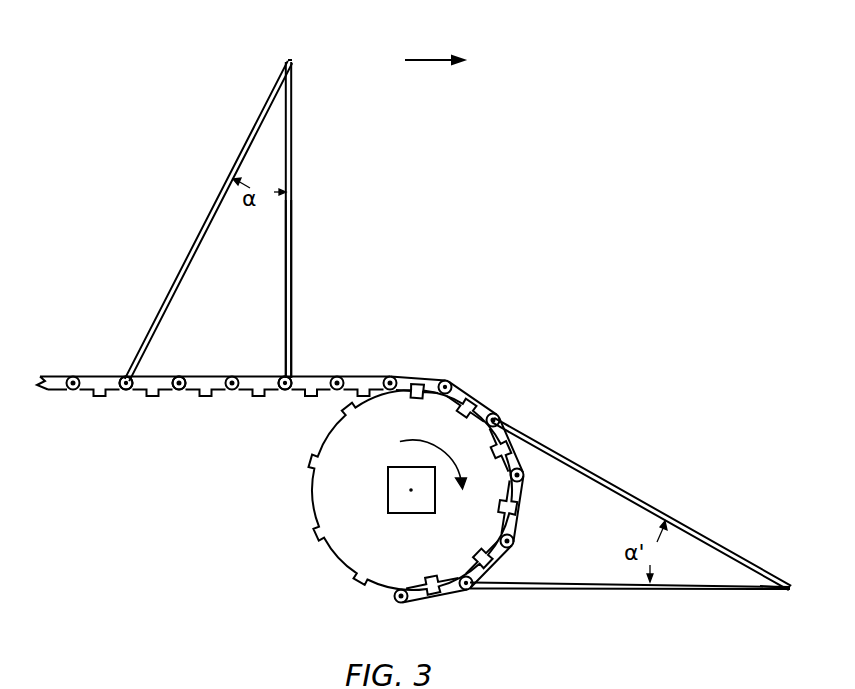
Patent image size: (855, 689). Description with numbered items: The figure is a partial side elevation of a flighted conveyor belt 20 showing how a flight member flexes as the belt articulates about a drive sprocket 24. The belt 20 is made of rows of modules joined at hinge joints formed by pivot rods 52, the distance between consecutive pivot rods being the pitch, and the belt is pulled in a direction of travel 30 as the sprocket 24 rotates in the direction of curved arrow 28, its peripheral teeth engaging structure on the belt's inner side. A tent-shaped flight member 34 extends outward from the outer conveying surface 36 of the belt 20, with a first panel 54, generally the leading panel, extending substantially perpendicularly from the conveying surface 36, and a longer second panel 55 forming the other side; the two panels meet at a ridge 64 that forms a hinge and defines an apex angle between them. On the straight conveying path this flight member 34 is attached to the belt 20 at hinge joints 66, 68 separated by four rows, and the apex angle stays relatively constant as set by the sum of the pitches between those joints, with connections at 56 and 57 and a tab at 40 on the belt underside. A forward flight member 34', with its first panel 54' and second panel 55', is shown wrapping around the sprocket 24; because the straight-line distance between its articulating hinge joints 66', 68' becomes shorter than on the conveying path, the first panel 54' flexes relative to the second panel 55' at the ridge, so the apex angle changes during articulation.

The direction of travel 30 is at (427, 60).
The ridge 64 is at (292, 60).
The flight member 34 is at (315, 220).
The first panel 54 is at (319, 289).
The second panel 55 is at (207, 221).
The connection of diagonal leg to chain 57 is at (123, 374).
The connection of upright member to chain 56 is at (291, 373).
The outer conveying surface 36 is at (365, 378).
The flighted conveyor belt 20 is at (423, 378).
The hinge joint 68 is at (117, 413).
The pivot rod 52 is at (180, 392).
The link tab 40 is at (207, 395).
The hinge joint 66 is at (285, 412).
The articulating hinge joint 68' is at (472, 373).
The articulating hinge joint 66' is at (484, 605).
The drive sprocket 24 is at (323, 502).
The curved arrow 28 is at (443, 450).
The second panel 55' is at (641, 504).
The first panel 54' is at (630, 615).
The forward flight member 34' is at (751, 616).